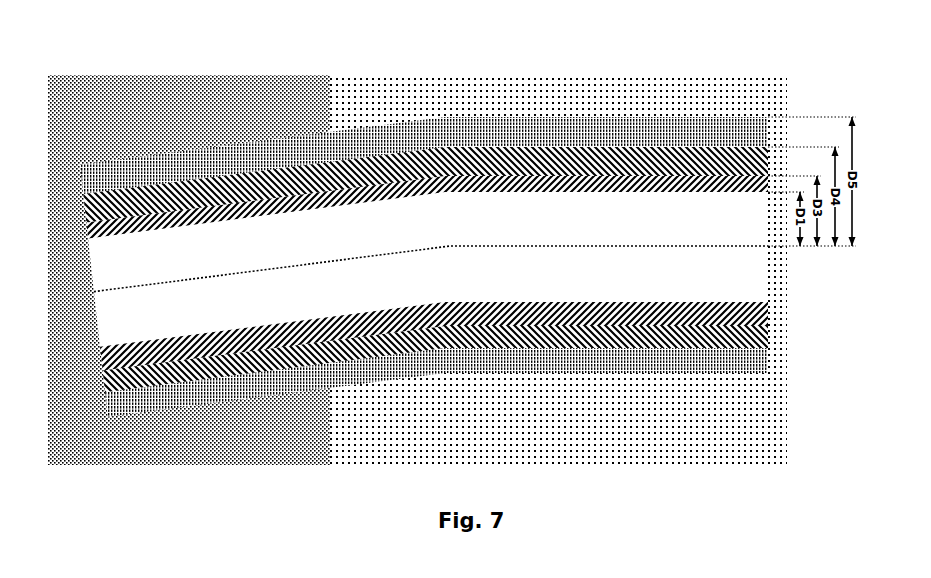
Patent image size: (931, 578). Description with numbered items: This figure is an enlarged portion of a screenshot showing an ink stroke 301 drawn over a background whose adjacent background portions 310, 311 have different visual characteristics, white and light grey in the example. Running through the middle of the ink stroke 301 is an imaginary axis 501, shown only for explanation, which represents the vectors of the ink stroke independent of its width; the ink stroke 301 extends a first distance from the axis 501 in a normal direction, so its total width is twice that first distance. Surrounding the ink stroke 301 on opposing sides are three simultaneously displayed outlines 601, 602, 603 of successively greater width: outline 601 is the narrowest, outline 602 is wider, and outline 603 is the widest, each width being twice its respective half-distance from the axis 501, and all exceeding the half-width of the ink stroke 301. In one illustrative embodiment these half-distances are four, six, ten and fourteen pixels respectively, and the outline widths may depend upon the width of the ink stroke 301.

The background portion 310 is at (184, 124).
The background portion 311 is at (584, 427).
The ink stroke 301 is at (444, 284).
The imaginary axis 501 is at (650, 248).
The outline 601 is at (484, 195).
The outline 602 is at (519, 170).
The outline 603 is at (553, 139).